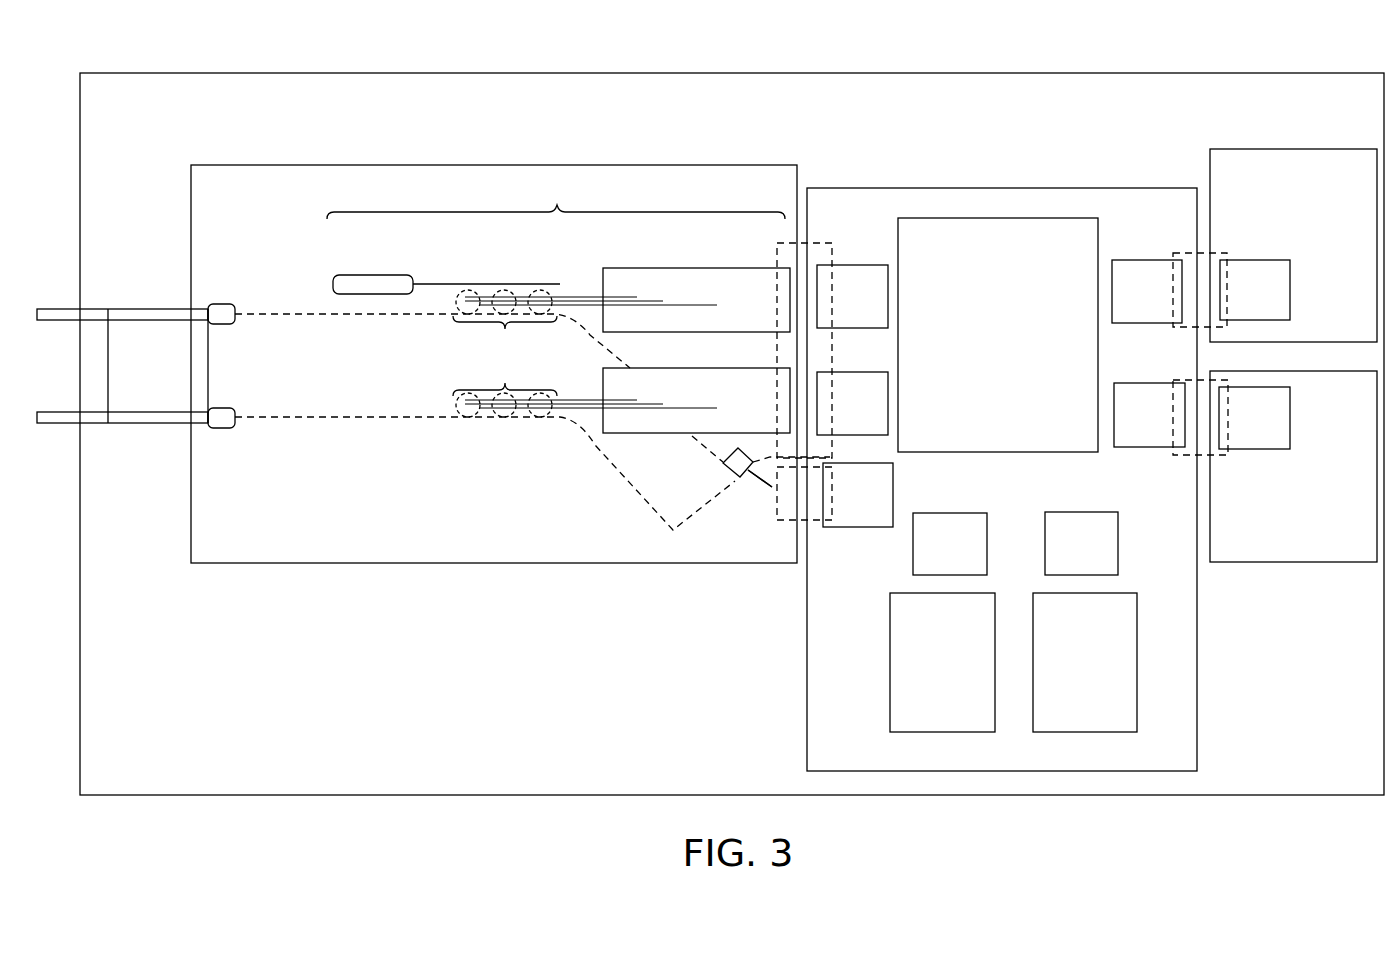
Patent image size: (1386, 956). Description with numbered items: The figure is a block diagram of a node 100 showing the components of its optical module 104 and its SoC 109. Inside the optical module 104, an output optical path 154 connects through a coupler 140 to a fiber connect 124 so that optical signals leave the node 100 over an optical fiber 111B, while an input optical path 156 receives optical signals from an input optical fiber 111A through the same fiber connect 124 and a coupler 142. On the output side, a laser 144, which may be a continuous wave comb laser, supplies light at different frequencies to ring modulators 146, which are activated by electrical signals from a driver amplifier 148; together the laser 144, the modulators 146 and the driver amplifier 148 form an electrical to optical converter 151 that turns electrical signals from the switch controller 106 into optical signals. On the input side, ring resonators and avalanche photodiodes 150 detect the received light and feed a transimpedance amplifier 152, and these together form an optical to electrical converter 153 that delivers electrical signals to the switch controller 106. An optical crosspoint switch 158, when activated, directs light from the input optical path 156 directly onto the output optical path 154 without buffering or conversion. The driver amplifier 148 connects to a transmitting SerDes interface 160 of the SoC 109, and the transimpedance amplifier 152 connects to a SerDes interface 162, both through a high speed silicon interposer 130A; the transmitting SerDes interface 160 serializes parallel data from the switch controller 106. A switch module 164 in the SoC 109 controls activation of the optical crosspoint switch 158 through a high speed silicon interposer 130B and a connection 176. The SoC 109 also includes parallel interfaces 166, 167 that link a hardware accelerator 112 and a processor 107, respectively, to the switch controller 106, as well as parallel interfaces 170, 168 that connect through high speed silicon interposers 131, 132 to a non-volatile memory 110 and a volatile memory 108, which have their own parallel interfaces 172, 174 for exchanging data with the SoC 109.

The node 100 is at (830, 73).
The optical module 104 is at (248, 165).
The switch controller 106 is at (1050, 218).
The processor 107 is at (890, 653).
The volatile memory 108 is at (1257, 563).
The SoC 109 is at (962, 188).
The non-volatile memory 110 is at (1285, 149).
The input optical fiber 111A is at (55, 423).
The optical fiber 111B is at (60, 309).
The hardware accelerator 112 is at (1137, 662).
The fiber connect 124 is at (130, 345).
The high speed silicon interposer 130A is at (800, 243).
The high speed silicon interposer 130B is at (815, 522).
The high speed silicon interposer 131 is at (1210, 253).
The high speed silicon interposer 132 is at (1220, 455).
The coupler 140 is at (220, 304).
The coupler 142 is at (222, 428).
The laser 144 is at (372, 275).
The modulators 146 is at (585, 322).
The driver amplifier 148 is at (668, 268).
The ring resonators and Avalanche PhotoDiodes 150 is at (585, 390).
The electrical to optical converter 151 is at (556, 198).
The TransImpedance Amplifier 152 is at (627, 435).
The optical to electrical converter 153 is at (552, 455).
The output optical path 154 is at (321, 318).
The input optical path 156 is at (334, 421).
The optical crosspoint switch 158 is at (723, 467).
The transmitting SerDes interface 160 is at (842, 265).
The SerDes interface 162 is at (888, 393).
The switch module 164 is at (858, 527).
The parallel interface 166 is at (1118, 533).
The parallel interface 167 is at (987, 514).
The parallel interface 168 is at (1160, 447).
The parallel interface 170 is at (1143, 323).
The parallel interface 172 is at (1264, 260).
The parallel interface 174 is at (1290, 426).
The connection 176 is at (772, 487).